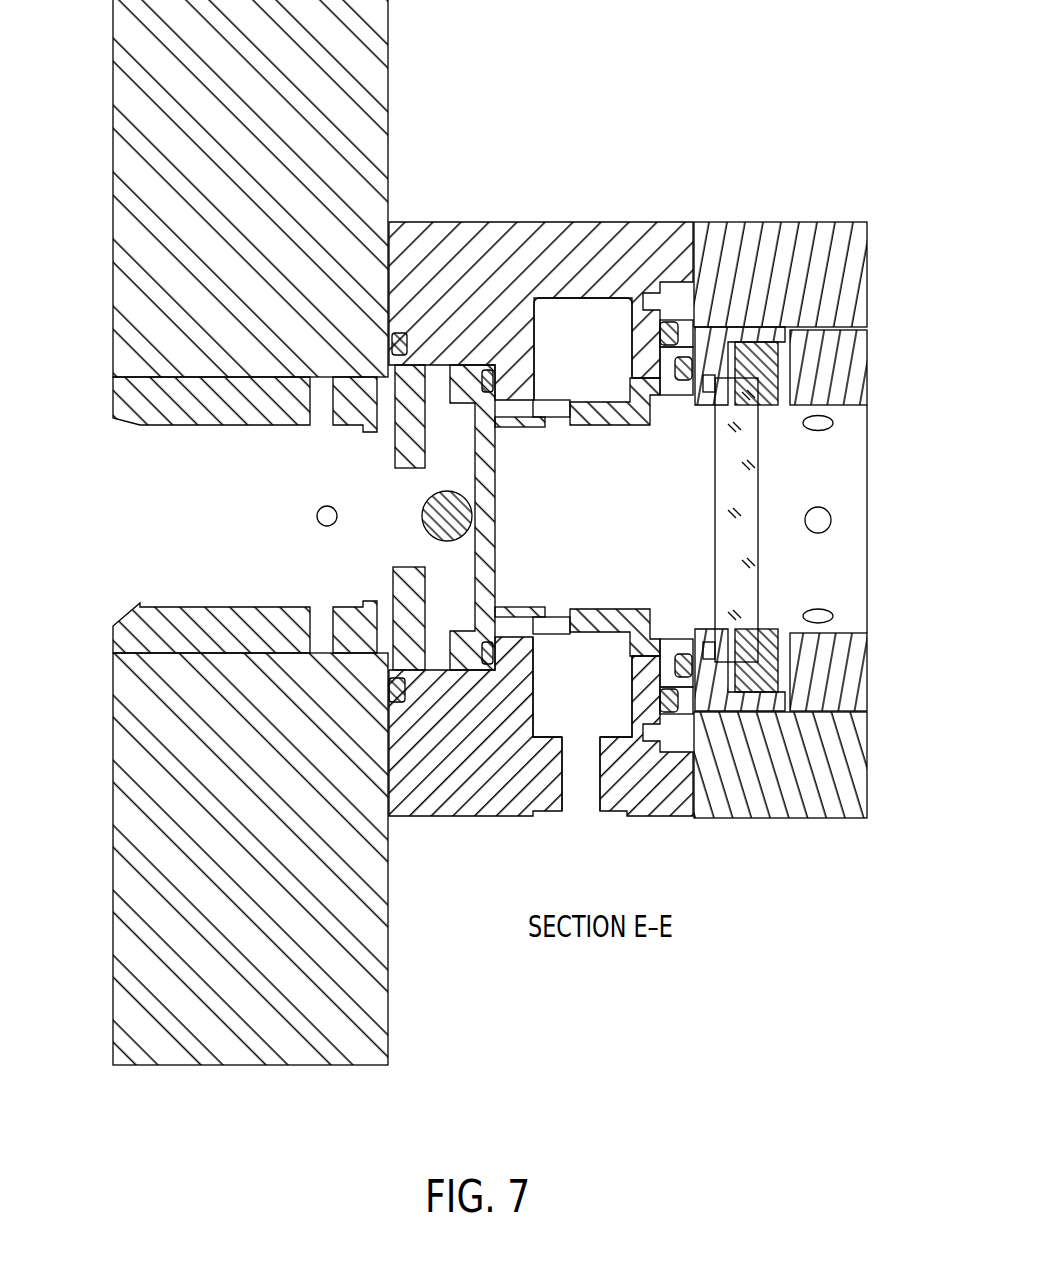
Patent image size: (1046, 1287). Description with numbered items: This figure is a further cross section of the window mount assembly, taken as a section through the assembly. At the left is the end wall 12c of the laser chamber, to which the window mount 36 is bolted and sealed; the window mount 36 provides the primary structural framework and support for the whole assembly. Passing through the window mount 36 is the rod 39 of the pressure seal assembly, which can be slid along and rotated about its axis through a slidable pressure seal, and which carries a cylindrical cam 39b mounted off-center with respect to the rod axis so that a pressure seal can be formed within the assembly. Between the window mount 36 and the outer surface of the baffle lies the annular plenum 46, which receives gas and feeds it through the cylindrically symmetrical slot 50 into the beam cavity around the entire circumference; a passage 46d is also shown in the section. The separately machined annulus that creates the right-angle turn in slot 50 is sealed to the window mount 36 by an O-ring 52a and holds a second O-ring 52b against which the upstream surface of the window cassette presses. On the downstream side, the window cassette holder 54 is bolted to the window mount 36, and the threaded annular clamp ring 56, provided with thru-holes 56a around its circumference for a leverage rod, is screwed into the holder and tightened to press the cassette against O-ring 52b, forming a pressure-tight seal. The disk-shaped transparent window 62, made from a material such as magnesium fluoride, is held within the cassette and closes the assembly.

The end wall 12c is at (113, 862).
The window mount 36 is at (486, 221).
The rod 39 is at (422, 516).
The cam 39b is at (447, 491).
The annular plenum 46 is at (594, 702).
The passage 46d is at (579, 800).
The slot 50 is at (632, 352).
The O-ring 52a is at (683, 652).
The O-ring 52b is at (683, 382).
The window cassette holder 54 is at (868, 262).
The clamp ring 56 is at (868, 355).
The thru-holes 56a is at (833, 425).
The window 62 is at (760, 457).